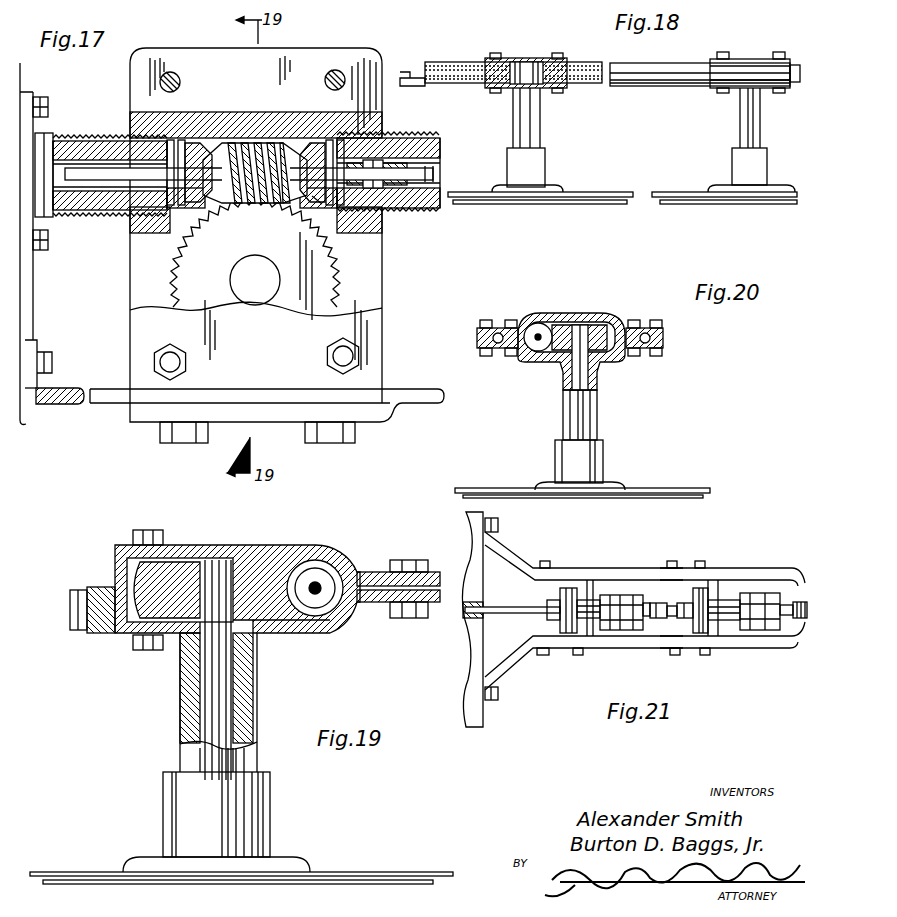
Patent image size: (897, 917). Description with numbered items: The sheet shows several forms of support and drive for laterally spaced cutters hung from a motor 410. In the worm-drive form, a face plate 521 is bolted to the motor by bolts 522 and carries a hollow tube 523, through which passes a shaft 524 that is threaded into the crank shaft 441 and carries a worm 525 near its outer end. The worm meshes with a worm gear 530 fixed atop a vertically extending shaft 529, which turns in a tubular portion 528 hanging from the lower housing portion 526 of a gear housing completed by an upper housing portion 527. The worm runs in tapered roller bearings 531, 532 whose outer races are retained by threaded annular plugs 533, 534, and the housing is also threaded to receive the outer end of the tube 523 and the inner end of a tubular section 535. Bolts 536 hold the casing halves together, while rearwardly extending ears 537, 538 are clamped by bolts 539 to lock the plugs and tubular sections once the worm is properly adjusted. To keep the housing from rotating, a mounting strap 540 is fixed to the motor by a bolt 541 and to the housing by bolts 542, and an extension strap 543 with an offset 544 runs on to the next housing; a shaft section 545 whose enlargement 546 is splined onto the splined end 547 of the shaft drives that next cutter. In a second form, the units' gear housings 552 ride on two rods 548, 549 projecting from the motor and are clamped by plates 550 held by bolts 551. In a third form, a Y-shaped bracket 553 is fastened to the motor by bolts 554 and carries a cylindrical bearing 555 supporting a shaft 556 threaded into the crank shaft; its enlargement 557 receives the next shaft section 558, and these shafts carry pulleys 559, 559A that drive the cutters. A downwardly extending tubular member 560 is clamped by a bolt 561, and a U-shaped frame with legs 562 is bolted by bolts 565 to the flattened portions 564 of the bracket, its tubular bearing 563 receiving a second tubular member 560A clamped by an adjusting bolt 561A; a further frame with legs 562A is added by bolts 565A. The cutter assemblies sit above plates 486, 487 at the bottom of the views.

In FIG. 17, the motor 410 is at (24, 268).
In FIG. 21, the motor 410 is at (478, 716).
In FIG. 21, the crank shaft 441 is at (479, 624).
In FIG. 18, the lower plate 486 is at (576, 204).
In FIG. 20, the lower plate 486 is at (660, 499).
In FIG. 19, the lower plate 486 is at (368, 884).
In FIG. 18, the upper plate 487 is at (602, 191).
In FIG. 20, the upper plate 487 is at (687, 488).
In FIG. 19, the upper plate 487 is at (375, 871).
In FIG. 17, the face plate 521 is at (28, 93).
In FIG. 17, the bolts 522 is at (48, 245).
In FIG. 17, the hollow tube 523 is at (73, 138).
In FIG. 17, the shaft 524 is at (101, 181).
In FIG. 17, the worm 525 is at (232, 160).
In FIG. 19, the worm 525 is at (342, 562).
In FIG. 18, the lower housing portion 526 is at (565, 89).
In FIG. 19, the lower housing portion 526 is at (290, 626).
In FIG. 18, the upper housing portion 527 is at (501, 59).
In FIG. 19, the upper housing portion 527 is at (275, 546).
In FIG. 18, the tubular portion 528 is at (742, 116).
In FIG. 19, the tubular portion 528 is at (254, 723).
In FIG. 19, the vertically extending shaft 529 is at (208, 672).
In FIG. 17, the worm gear 530 is at (270, 241).
In FIG. 19, the worm gear 530 is at (174, 570).
In FIG. 17, the tapered roller bearing 531 is at (205, 143).
In FIG. 17, the tapered roller bearing 532 is at (312, 148).
In FIG. 17, the annular plug 533 is at (180, 142).
In FIG. 17, the annular plug 534 is at (342, 148).
In FIG. 17, the tubular section 535 is at (420, 137).
In FIG. 18, the tubular section 535 is at (513, 72).
In FIG. 17, the bolts 536 is at (165, 349).
In FIG. 18, the bolts 536 is at (557, 55).
In FIG. 19, the bolts 536 is at (150, 530).
In FIG. 19, the ear 537 is at (378, 572).
In FIG. 19, the ear 538 is at (378, 604).
In FIG. 17, the bolts 539 is at (171, 70).
In FIG. 18, the bolts 539 is at (722, 52).
In FIG. 19, the bolts 539 is at (410, 618).
In FIG. 17, the mounting strap 540 is at (65, 405).
In FIG. 18, the mounting strap 540 is at (412, 76).
In FIG. 17, the bolt 541 is at (48, 356).
In FIG. 17, the bolts 542 is at (186, 445).
In FIG. 17, the extension strap 543 is at (430, 404).
In FIG. 18, the extension strap 543 is at (656, 85).
In FIG. 17, the offset 544 is at (397, 412).
In FIG. 17, the shaft section 545 is at (433, 183).
In FIG. 17, the enlargement 546 is at (400, 189).
In FIG. 17, the splined end 547 is at (322, 204).
In FIG. 20, the rod 548 is at (499, 333).
In FIG. 20, the rod 549 is at (650, 334).
In FIG. 20, the plates 550 is at (478, 330).
In FIG. 20, the bolts 551 is at (626, 325).
In FIG. 20, the gear housing 552 is at (603, 362).
In FIG. 21, the Y-shaped bracket 553 is at (503, 548).
In FIG. 21, the bolts 554 is at (500, 697).
In FIG. 21, the cylindrical bearing 555 is at (592, 605).
In FIG. 21, the shaft 556 is at (500, 607).
In FIG. 21, the enlargement 557 is at (657, 607).
In FIG. 21, the shaft section 558 is at (681, 604).
In FIG. 21, the pulley 559 is at (558, 599).
In FIG. 21, the pulley 559A is at (693, 621).
In FIG. 21, the tubular member 560 is at (637, 631).
In FIG. 21, the tubular member 560A is at (748, 631).
In FIG. 21, the bolt 561 is at (628, 595).
In FIG. 21, the adjusting bolt 561A is at (763, 594).
In FIG. 21, the legs 562 is at (590, 568).
In FIG. 21, the legs 562A is at (720, 568).
In FIG. 21, the tubular bearing 563 is at (725, 606).
In FIG. 21, the flattened portions 564 is at (538, 561).
In FIG. 21, the bolts 565 is at (537, 655).
In FIG. 21, the bolts 565A is at (690, 656).